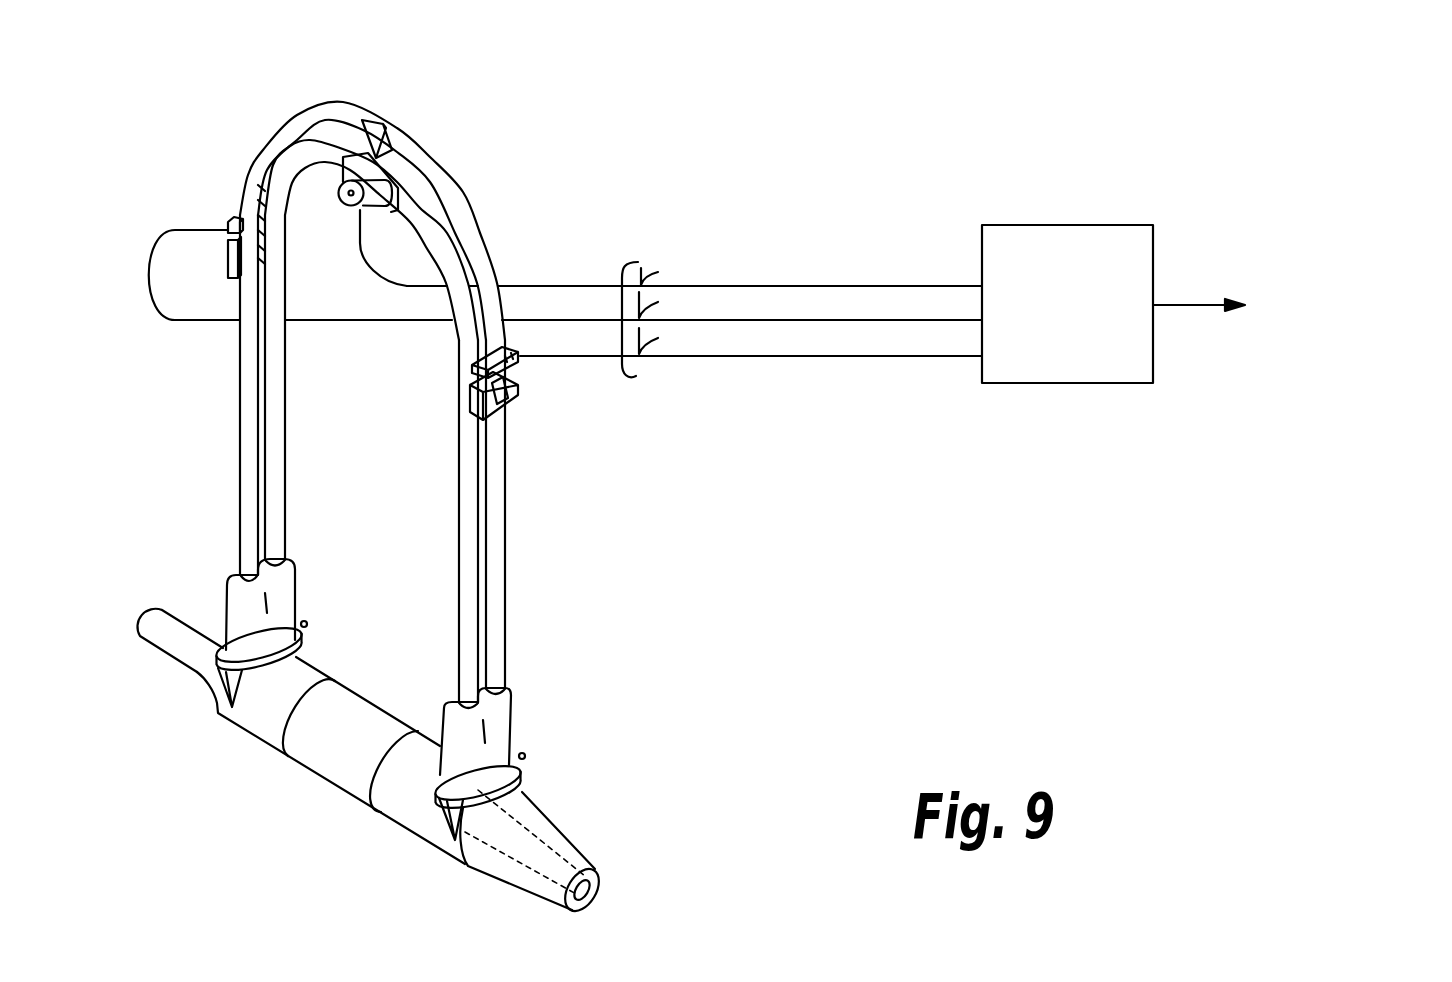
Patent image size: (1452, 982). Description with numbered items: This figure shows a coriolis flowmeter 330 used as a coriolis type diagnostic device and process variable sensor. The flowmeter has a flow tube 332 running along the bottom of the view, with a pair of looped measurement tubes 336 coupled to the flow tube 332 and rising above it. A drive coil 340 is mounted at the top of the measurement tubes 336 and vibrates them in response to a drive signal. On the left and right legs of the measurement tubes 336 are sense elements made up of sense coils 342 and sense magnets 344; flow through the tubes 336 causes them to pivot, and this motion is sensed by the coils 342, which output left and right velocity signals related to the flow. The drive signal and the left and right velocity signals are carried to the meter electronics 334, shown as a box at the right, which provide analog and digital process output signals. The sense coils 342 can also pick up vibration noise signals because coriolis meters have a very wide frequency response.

The coriolis flowmeter 330 is at (1026, 507).
The flow tube 332 is at (322, 770).
The meter electronics 334 is at (1073, 226).
The measurement tubes 336 is at (313, 110).
The drive coil 340 is at (343, 207).
The sense coils 342 is at (230, 222).
The sense magnets 344 is at (227, 252).